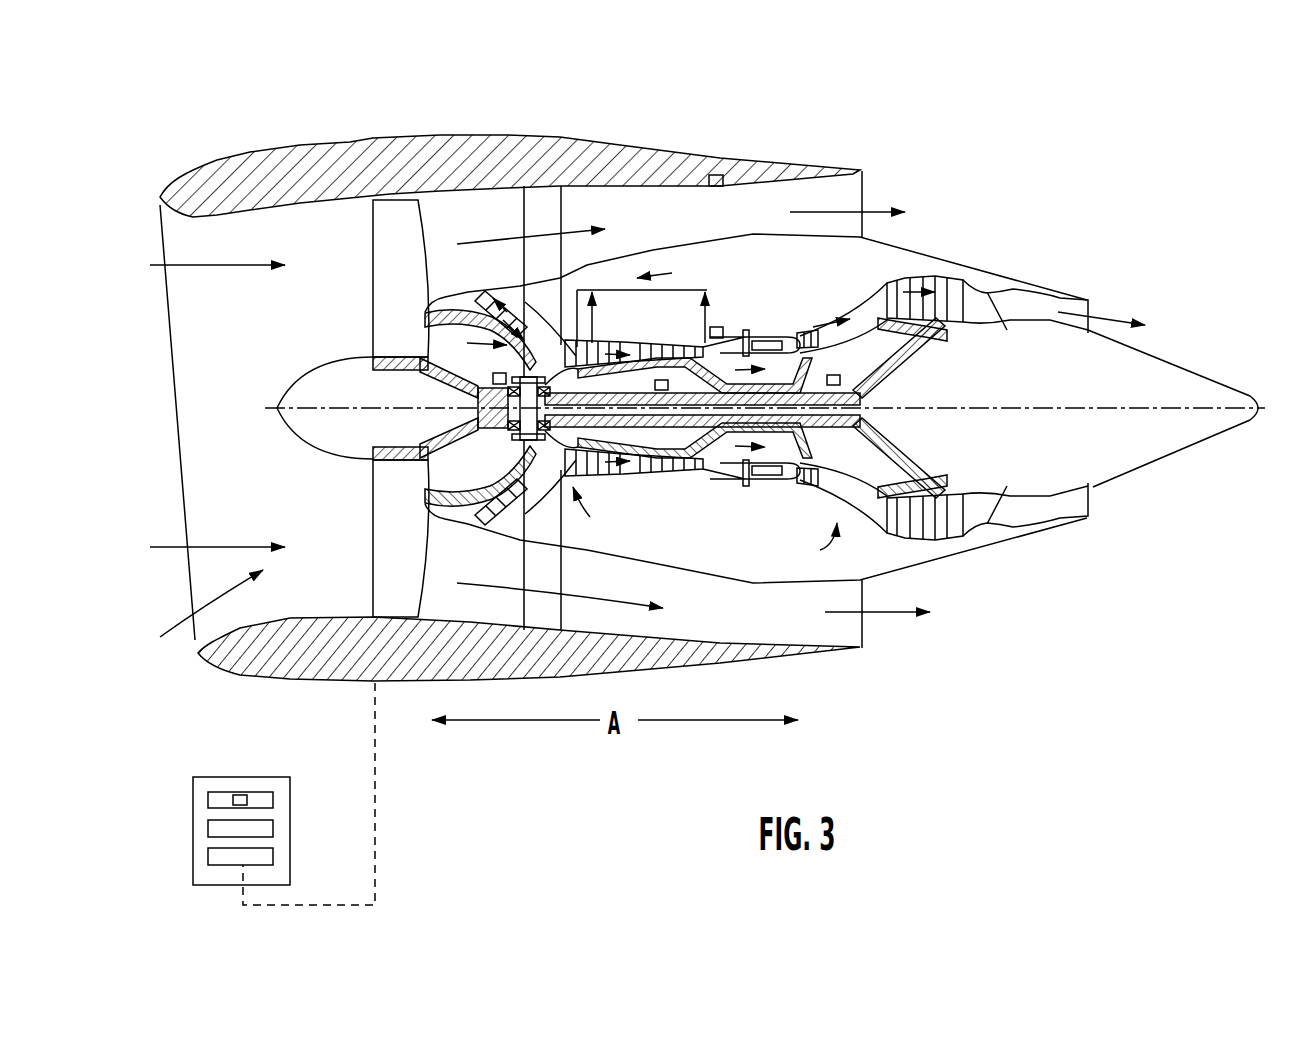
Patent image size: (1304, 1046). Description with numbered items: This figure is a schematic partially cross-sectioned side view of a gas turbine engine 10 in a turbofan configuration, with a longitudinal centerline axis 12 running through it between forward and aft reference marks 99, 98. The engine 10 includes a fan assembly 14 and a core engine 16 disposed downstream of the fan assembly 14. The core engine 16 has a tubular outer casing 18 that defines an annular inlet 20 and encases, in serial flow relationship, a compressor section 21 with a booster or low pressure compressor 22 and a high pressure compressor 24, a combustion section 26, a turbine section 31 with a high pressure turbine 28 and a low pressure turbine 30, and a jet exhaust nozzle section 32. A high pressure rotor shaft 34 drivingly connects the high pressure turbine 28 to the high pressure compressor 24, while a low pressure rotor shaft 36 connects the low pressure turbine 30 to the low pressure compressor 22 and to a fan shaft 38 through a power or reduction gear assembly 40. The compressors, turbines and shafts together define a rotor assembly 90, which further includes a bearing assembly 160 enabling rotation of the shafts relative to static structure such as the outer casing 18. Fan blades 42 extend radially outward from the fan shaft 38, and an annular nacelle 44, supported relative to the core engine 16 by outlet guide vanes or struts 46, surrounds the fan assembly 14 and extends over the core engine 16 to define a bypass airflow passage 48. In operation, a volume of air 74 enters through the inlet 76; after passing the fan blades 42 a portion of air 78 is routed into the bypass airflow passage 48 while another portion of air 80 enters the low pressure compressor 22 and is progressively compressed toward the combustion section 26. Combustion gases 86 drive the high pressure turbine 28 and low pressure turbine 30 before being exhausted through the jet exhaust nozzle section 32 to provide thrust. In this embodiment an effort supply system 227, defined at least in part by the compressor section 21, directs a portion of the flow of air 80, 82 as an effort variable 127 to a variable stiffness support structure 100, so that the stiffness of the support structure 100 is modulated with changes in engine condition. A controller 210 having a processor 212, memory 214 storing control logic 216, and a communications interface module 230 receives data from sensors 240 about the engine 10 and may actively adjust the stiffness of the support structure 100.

The gas turbine engine 10 is at (1002, 160).
The axial centerline axis 12 is at (1030, 405).
The fan assembly 14 is at (450, 205).
The core engine 16 is at (753, 232).
The outer casing 18 is at (720, 573).
The annular inlet 20 is at (460, 513).
The compressor section 21 is at (590, 517).
The low pressure compressor 22 is at (520, 480).
The high pressure compressor 24 is at (592, 467).
The combustion section 26 is at (753, 480).
The high pressure turbine 28 is at (818, 473).
The low pressure turbine 30 is at (947, 550).
The turbine section 31 is at (818, 551).
The jet exhaust nozzle section 32 is at (1010, 523).
The high pressure rotor shaft 34 is at (818, 368).
The low pressure rotor shaft 36 is at (905, 372).
The fan shaft 38 is at (417, 380).
The power or reduction gear assembly 40 is at (517, 373).
The fan blades 42 is at (387, 237).
The nacelle 44 is at (375, 135).
The outlet guide vanes or struts 46 is at (550, 220).
The bypass airflow passage 48 is at (664, 237).
The volume of air 74 is at (195, 262).
The inlet 76 is at (200, 621).
The bypass air portion 78 is at (882, 210).
The core air portion 80 is at (447, 300).
The compressor air flow 82 is at (570, 330).
The combustion gases 86 is at (1108, 314).
The rotor assembly 90 is at (630, 345).
The aft reference 98 is at (1276, 413).
The forward reference 99 is at (138, 413).
The variable stiffness support structure 100 is at (812, 345).
The effort variable 127 is at (545, 312).
The bearing assembly 160 is at (495, 432).
The controller 210 is at (267, 780).
The processor 212 is at (266, 828).
The memory 214 is at (266, 800).
The control logic 216 is at (235, 802).
The effort supply system 227 is at (672, 274).
The communications interface module 230 is at (266, 856).
The sensor 240 is at (716, 173).